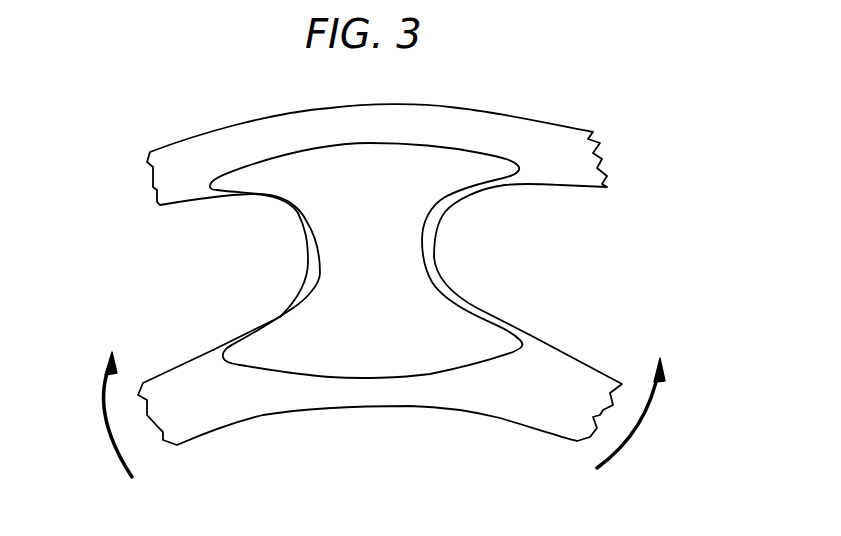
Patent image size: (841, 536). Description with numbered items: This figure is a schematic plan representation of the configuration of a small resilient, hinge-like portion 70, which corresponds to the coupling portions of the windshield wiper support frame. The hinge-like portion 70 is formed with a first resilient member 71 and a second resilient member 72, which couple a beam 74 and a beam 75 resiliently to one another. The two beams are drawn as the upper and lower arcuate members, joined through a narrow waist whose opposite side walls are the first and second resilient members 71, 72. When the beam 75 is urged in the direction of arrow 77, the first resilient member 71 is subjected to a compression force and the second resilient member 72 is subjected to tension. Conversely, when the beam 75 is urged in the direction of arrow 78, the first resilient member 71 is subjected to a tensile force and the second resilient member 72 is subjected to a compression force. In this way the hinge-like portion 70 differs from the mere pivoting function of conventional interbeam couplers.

The hinge-like portion 70 is at (383, 482).
The first resilient member 71 is at (308, 247).
The second resilient member 72 is at (435, 253).
The beam 74 is at (480, 128).
The beam 75 is at (250, 395).
The arrow 77 is at (102, 402).
The arrow 78 is at (648, 423).